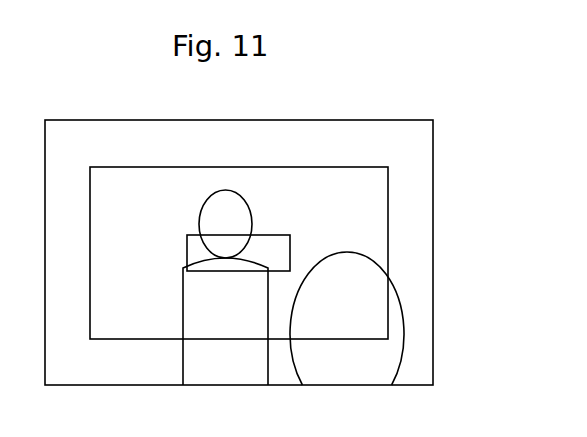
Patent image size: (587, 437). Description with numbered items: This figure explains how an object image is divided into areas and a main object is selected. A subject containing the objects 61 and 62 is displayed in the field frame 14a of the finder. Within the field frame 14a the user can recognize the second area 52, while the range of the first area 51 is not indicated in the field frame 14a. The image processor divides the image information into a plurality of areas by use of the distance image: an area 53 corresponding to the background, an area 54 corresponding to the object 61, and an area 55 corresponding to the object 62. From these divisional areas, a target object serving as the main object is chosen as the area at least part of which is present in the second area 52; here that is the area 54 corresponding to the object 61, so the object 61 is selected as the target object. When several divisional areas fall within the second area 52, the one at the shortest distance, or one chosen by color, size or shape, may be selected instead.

The field frame 14a is at (370, 120).
The first area 51 is at (155, 167).
The second area 52 is at (270, 235).
The area corresponding to the background 53 is at (123, 327).
The area corresponding to the object 54 is at (225, 265).
The area corresponding to the object 55 is at (350, 263).
The object 61 is at (245, 367).
The object 62 is at (355, 370).